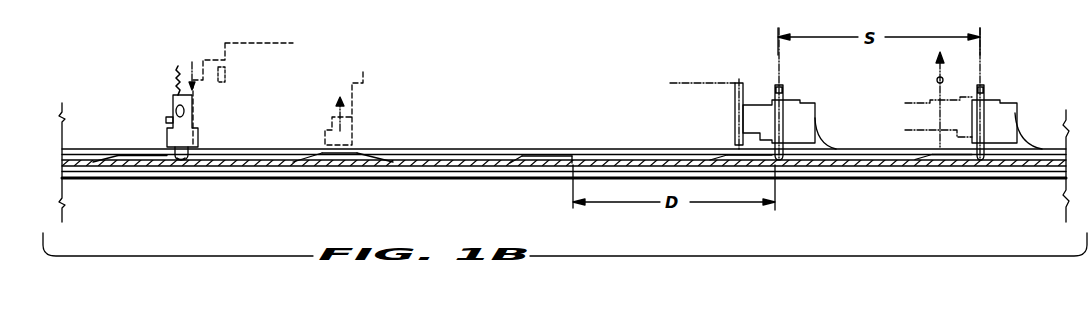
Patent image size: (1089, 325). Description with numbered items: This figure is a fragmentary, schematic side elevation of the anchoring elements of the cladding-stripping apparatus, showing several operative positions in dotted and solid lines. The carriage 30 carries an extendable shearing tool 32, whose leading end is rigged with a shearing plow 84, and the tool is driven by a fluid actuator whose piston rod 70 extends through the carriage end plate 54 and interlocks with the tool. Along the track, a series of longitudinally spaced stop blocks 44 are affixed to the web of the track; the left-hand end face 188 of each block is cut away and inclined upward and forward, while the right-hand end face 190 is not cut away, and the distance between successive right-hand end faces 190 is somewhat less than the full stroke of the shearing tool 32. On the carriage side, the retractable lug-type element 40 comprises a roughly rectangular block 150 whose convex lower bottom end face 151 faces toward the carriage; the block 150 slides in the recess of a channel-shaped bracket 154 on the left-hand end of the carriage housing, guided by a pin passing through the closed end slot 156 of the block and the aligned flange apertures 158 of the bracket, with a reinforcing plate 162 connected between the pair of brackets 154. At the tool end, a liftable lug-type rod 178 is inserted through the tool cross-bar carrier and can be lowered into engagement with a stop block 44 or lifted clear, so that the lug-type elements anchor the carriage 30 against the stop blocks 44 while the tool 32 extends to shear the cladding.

The carriage 30 is at (260, 40).
The extendable shearing tool 32 is at (810, 91).
The retractable anchoring lug-type element 40 is at (190, 61).
The stop block 44 is at (128, 147).
The end plate 54 is at (197, 90).
The piston rod 70 is at (752, 102).
The shearing plow 84 is at (828, 141).
The block 150 is at (177, 152).
The lower bottom end face 151 is at (182, 163).
The channel-shaped bracket 154 is at (170, 140).
The closed end slot 156 is at (177, 100).
The flange aperture 158 is at (186, 110).
The reinforcing plate 162 is at (167, 119).
The liftable lug-type rod 178 is at (777, 84).
The left-hand end face 188 is at (110, 157).
The right-hand end face 190 is at (385, 153).